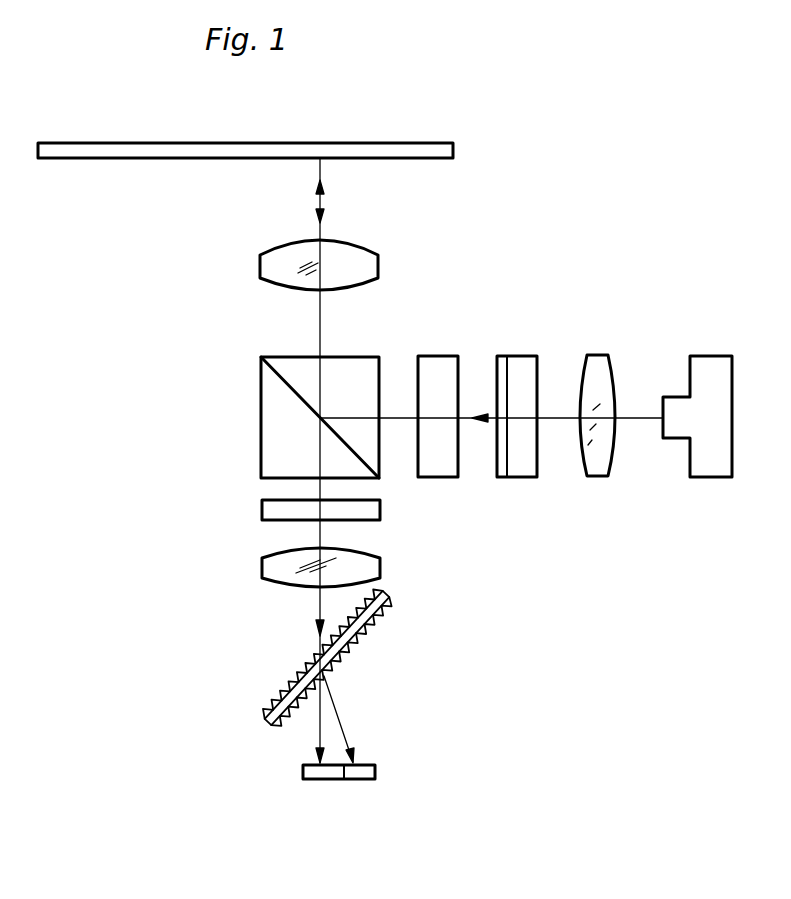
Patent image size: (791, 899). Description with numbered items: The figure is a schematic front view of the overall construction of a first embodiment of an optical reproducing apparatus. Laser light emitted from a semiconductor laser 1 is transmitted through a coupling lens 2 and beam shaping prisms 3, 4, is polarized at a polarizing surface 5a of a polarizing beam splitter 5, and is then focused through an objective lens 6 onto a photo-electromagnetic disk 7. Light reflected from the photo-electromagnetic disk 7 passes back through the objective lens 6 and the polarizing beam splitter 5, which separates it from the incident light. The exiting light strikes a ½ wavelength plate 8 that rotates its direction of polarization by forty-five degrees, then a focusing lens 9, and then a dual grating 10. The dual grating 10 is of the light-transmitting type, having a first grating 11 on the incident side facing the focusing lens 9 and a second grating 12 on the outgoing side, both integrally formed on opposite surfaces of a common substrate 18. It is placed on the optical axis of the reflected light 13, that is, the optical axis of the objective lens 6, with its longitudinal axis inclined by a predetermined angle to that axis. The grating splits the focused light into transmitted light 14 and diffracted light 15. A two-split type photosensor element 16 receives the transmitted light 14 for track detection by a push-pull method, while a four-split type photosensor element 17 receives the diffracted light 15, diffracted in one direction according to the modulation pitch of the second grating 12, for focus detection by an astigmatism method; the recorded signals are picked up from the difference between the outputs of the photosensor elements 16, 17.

The semiconductor laser 1 is at (708, 368).
The coupling lens 2 is at (598, 368).
The beam shaping prism 3 is at (530, 368).
The beam shaping prism 4 is at (450, 370).
The polarizing beam splitter 5 is at (270, 448).
The polarizing surface 5a is at (292, 378).
The objective lens 6 is at (290, 262).
The photo-electromagnetic disk 7 is at (382, 150).
The ½ wavelength plate 8 is at (270, 507).
The focusing lens 9 is at (270, 560).
The dual grating 10 is at (331, 651).
The first grating 11 is at (382, 592).
The second grating 12 is at (362, 642).
The reflected light 13 is at (313, 617).
The transmitted light 14 is at (318, 732).
The diffracted light 15 is at (345, 725).
The two-split type photosensor element 16 is at (320, 780).
The four-split type photosensor element 17 is at (360, 775).
The common substrate 18 is at (392, 600).